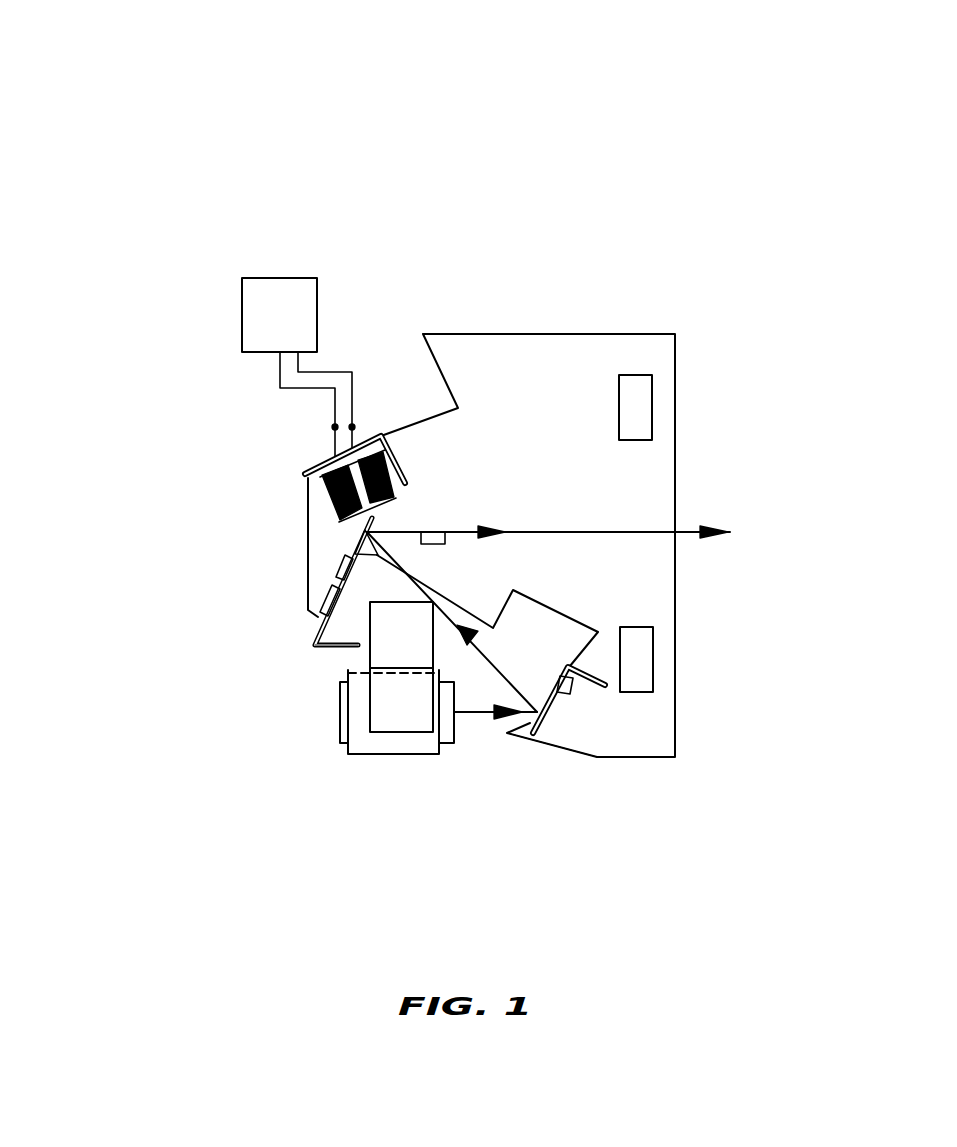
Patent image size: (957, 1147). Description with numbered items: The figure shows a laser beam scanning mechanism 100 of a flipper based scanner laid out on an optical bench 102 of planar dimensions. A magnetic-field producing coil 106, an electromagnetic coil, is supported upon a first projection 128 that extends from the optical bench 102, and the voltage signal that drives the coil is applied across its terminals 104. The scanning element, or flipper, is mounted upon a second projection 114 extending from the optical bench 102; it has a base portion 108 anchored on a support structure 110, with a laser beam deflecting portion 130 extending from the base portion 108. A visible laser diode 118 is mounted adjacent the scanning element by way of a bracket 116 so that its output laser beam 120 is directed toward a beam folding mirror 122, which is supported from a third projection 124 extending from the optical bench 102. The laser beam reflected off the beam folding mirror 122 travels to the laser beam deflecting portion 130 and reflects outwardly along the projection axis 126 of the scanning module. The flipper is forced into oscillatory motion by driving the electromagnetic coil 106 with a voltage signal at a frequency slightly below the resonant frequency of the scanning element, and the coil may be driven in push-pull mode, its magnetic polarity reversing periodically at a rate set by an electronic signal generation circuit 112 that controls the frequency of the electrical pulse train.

The optical scanning system 100 is at (759, 125).
The optical bench 102 is at (675, 385).
The terminals 104 is at (352, 427).
The magnetic-field producing coil 106 is at (322, 492).
The base portion 108 is at (350, 555).
The support structure 110 is at (313, 612).
The electronic signal generation circuit 112 is at (242, 328).
The second projection 114 is at (313, 648).
The bracket 116 is at (383, 688).
The visible laser diode 118 is at (415, 755).
The output laser beam 120 is at (472, 714).
The beam folding mirror 122 is at (507, 733).
The third projection 124 is at (543, 728).
The projection axis 126 is at (642, 532).
The first projection 128 is at (369, 443).
The laser beam deflecting portion 130 is at (370, 528).